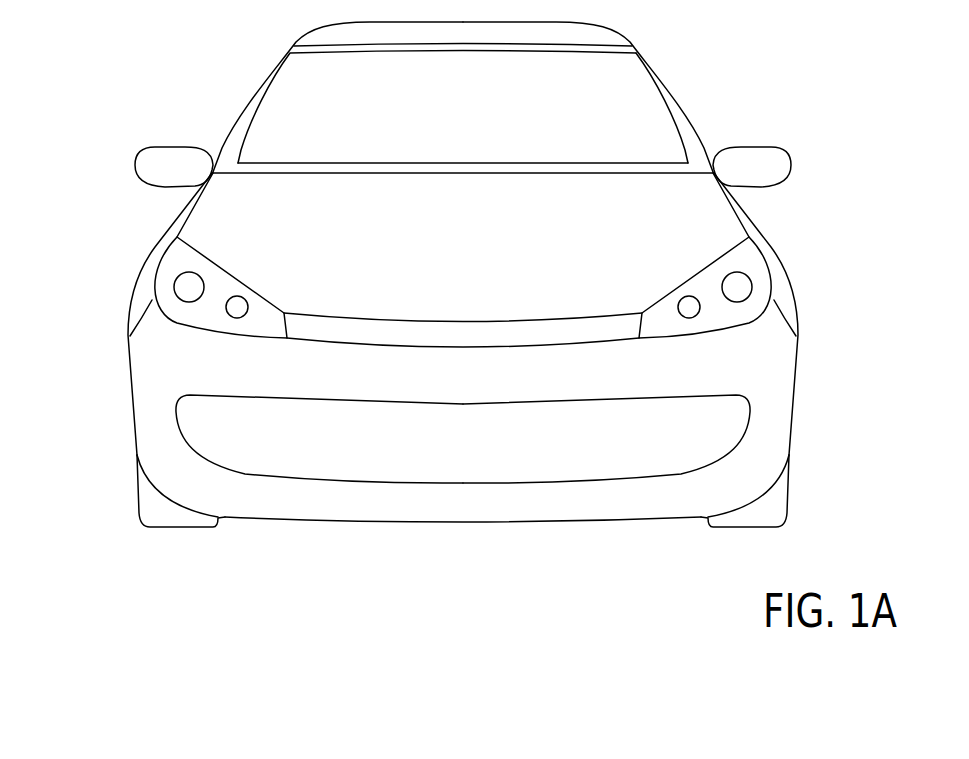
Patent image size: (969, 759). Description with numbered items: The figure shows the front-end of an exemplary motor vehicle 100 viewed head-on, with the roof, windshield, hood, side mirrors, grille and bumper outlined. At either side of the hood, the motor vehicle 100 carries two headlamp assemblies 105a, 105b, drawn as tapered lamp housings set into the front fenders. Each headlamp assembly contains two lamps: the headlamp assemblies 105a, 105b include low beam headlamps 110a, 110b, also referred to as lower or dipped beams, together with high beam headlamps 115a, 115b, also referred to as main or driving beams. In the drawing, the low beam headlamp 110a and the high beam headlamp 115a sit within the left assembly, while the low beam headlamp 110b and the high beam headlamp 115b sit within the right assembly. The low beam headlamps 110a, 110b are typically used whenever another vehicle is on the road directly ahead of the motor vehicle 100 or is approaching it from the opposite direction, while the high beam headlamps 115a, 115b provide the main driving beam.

The motor vehicle 100 is at (672, 67).
The headlamp assembly 105a is at (167, 258).
The headlamp assembly 105b is at (743, 258).
The low beam headlamp 110a is at (180, 276).
The low beam headlamp 110b is at (746, 277).
The high beam headlamp 115a is at (226, 306).
The high beam headlamp 115b is at (700, 307).